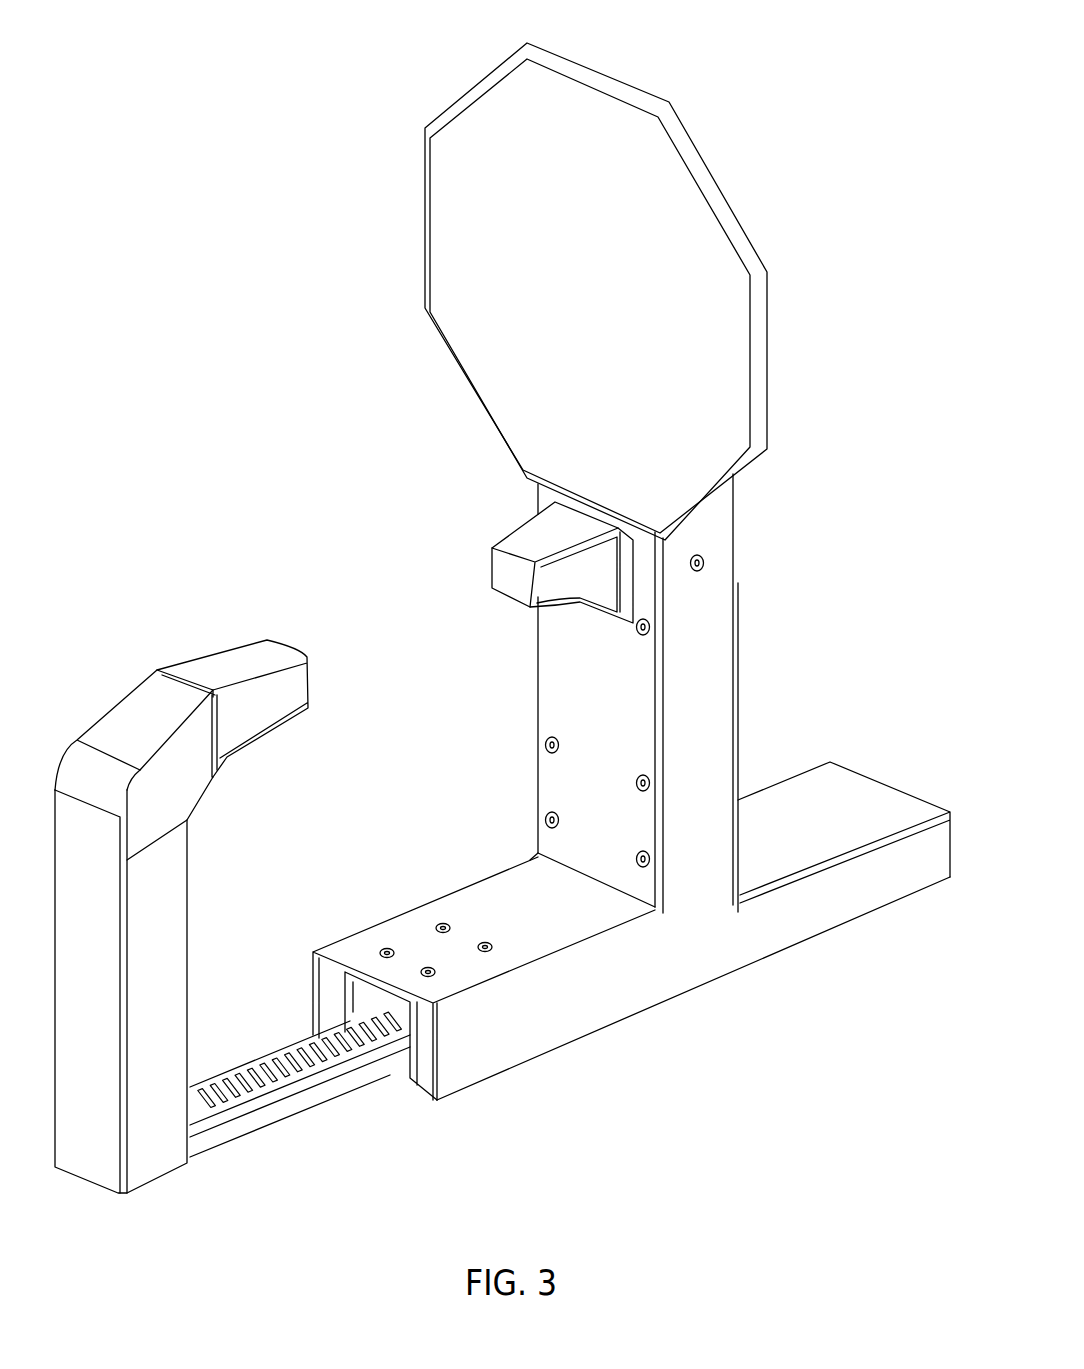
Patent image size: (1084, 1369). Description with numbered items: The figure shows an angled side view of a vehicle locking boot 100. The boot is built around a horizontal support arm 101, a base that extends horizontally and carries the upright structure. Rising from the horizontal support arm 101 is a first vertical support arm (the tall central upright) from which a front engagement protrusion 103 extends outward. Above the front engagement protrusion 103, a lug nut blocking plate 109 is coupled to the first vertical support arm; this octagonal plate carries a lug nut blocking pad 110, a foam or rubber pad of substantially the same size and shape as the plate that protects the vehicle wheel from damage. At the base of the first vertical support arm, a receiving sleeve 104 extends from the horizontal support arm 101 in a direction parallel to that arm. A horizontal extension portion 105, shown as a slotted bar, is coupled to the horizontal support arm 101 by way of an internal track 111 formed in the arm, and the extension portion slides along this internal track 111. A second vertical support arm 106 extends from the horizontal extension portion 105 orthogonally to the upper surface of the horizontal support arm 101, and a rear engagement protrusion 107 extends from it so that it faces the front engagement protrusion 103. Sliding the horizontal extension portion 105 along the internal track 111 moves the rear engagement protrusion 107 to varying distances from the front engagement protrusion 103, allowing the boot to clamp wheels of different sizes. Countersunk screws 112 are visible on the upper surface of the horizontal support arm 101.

The vehicle locking boot 100 is at (165, 128).
The horizontal support arm 101 is at (541, 912).
The front engagement protrusion 103 is at (525, 543).
The receiving sleeve 104 is at (880, 810).
The horizontal extension portion 105 is at (236, 1122).
The second vertical support arm 106 is at (90, 1140).
The rear engagement protrusion 107 is at (245, 660).
The lug nut blocking plate 109 is at (720, 186).
The lug nut blocking pad 110 is at (567, 180).
The internal track 111 is at (368, 999).
The countersunk screws 112 is at (497, 947).